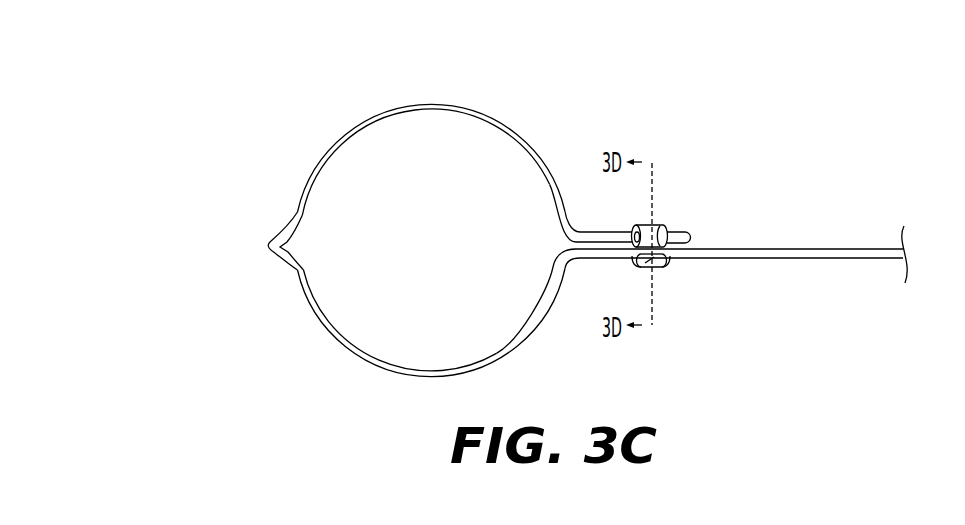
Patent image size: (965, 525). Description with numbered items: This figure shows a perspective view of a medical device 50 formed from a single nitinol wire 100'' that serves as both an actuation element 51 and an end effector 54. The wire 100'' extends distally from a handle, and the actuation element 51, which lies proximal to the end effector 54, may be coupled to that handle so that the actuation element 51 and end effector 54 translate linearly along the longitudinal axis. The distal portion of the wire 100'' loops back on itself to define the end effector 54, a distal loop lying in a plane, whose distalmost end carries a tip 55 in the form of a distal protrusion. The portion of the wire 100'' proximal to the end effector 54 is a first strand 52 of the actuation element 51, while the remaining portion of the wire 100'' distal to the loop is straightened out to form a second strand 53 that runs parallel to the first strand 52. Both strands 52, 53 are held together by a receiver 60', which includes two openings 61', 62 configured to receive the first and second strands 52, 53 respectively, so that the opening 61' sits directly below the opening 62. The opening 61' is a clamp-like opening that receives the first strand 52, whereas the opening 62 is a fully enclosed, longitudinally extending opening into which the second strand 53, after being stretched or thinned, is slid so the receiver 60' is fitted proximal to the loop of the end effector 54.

The medical device 50 is at (394, 189).
The actuation element 51 is at (783, 231).
The first strand 52 is at (590, 259).
The second strand 53 is at (593, 231).
The end effector 54 is at (290, 192).
The tip 55 is at (272, 256).
The receiver 60' is at (667, 276).
The opening 61' is at (686, 296).
The opening 62 is at (632, 227).
The nitinol wire 100'' is at (753, 245).